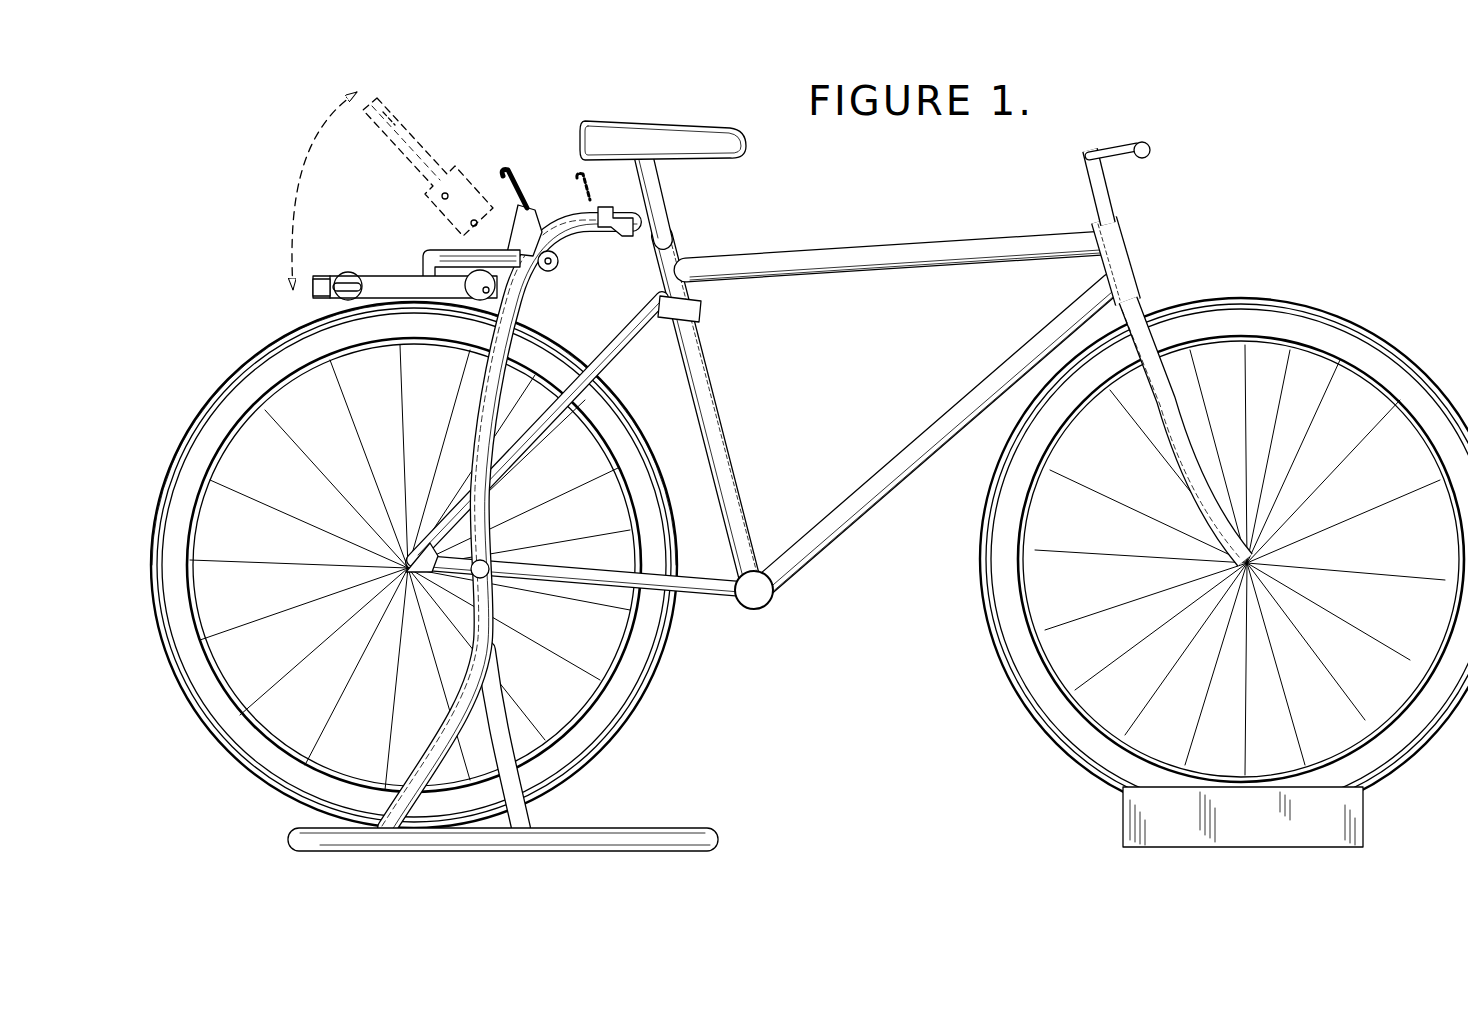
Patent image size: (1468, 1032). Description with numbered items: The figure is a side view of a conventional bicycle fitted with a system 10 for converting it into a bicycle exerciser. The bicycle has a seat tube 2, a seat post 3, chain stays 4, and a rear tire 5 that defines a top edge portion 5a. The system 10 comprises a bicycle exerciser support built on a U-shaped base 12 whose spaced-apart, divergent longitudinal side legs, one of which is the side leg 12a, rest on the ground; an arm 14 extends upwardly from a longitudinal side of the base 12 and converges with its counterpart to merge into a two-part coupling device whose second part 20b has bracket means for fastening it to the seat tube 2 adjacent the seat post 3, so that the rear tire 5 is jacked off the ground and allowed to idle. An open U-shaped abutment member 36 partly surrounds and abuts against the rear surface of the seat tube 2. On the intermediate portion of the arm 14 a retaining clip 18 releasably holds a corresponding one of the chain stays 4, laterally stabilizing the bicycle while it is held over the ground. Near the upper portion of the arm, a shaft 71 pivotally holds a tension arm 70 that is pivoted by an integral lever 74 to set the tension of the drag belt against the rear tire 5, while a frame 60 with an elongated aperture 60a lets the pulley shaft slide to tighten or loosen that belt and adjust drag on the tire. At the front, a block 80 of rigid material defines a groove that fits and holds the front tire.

The system 10 is at (457, 443).
The U-shaped base 12 is at (642, 821).
The longitudinal side leg 12a is at (502, 839).
The arm 14 is at (467, 412).
The retaining clip 18 is at (466, 574).
The coupling device second part 20b is at (619, 206).
The seat tube 2 is at (682, 232).
The seat post 3 is at (672, 182).
The open U-shaped abutment member 36 is at (683, 253).
The chain stays 4 is at (587, 582).
The rear tire 5 is at (414, 565).
The top edge portion 5a is at (400, 304).
The frame 60 is at (298, 175).
The elongated aperture 60a is at (298, 299).
The tension arm 70 is at (450, 247).
The shaft 71 is at (564, 266).
The lever 74 is at (511, 160).
The block 80 is at (1243, 817).